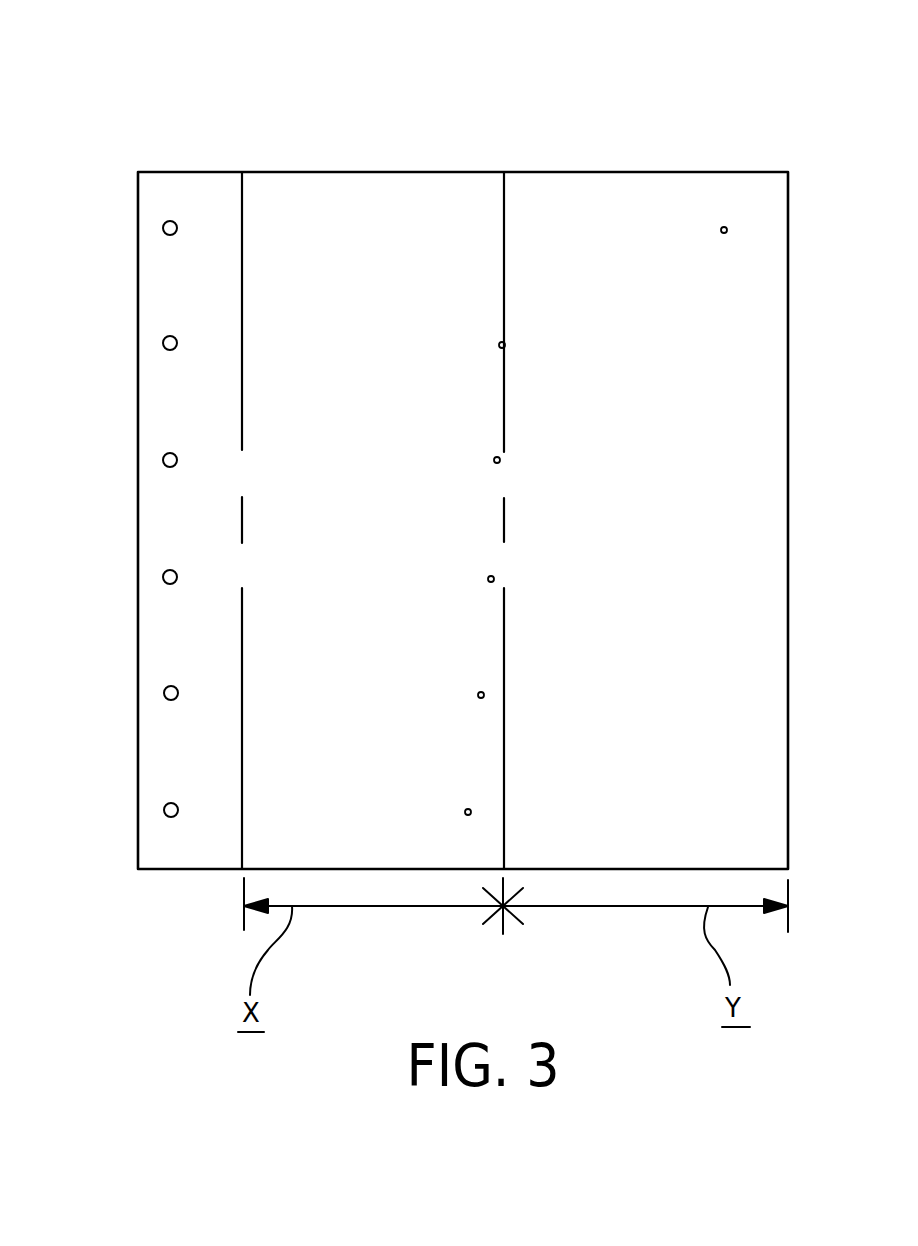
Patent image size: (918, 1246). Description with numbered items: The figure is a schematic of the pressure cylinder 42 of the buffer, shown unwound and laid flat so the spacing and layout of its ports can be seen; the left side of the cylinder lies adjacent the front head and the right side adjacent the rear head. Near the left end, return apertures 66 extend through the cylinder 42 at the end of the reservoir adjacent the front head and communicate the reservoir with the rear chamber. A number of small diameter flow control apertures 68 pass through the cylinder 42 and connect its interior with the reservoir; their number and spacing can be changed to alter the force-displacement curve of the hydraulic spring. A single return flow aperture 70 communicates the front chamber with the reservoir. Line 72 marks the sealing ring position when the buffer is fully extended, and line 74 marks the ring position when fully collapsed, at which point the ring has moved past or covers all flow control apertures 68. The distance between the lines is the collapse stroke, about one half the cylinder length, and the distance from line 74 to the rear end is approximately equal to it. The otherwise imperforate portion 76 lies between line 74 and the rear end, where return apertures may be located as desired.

The pressure cylinder 42 is at (125, 137).
The return apertures 66 is at (162, 228).
The flow control apertures 68 is at (502, 348).
The return flow aperture 70 is at (727, 230).
The line 72 is at (243, 216).
The line 74 is at (504, 205).
The imperforate portion 76 is at (790, 152).